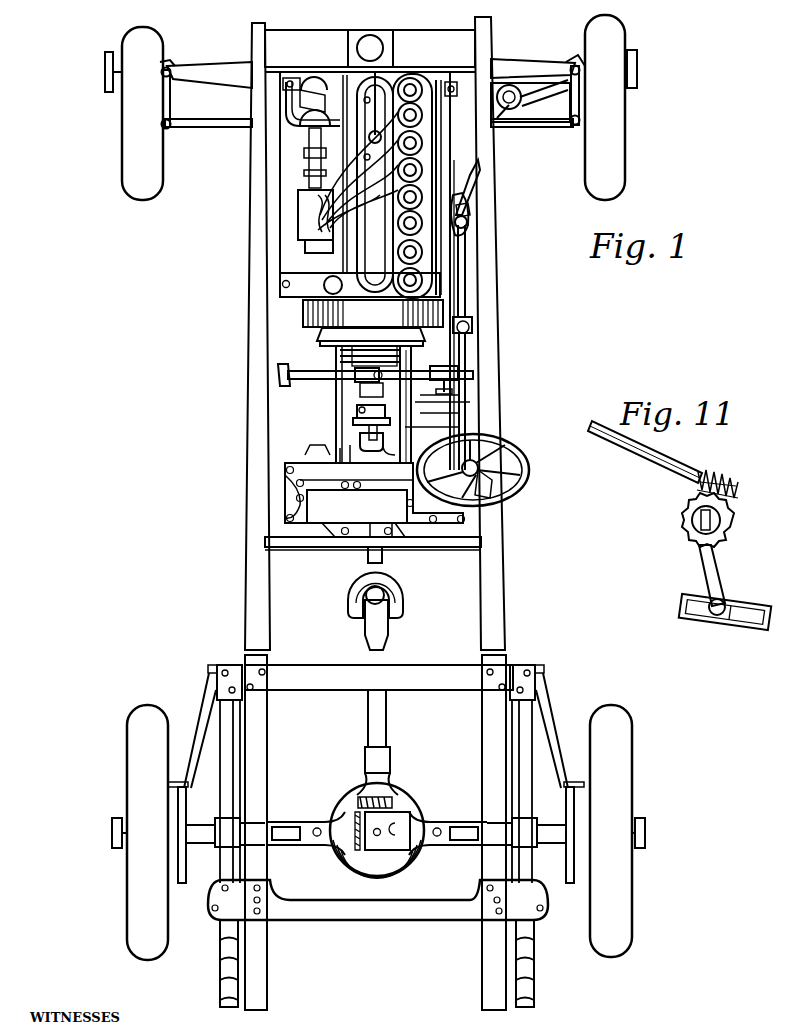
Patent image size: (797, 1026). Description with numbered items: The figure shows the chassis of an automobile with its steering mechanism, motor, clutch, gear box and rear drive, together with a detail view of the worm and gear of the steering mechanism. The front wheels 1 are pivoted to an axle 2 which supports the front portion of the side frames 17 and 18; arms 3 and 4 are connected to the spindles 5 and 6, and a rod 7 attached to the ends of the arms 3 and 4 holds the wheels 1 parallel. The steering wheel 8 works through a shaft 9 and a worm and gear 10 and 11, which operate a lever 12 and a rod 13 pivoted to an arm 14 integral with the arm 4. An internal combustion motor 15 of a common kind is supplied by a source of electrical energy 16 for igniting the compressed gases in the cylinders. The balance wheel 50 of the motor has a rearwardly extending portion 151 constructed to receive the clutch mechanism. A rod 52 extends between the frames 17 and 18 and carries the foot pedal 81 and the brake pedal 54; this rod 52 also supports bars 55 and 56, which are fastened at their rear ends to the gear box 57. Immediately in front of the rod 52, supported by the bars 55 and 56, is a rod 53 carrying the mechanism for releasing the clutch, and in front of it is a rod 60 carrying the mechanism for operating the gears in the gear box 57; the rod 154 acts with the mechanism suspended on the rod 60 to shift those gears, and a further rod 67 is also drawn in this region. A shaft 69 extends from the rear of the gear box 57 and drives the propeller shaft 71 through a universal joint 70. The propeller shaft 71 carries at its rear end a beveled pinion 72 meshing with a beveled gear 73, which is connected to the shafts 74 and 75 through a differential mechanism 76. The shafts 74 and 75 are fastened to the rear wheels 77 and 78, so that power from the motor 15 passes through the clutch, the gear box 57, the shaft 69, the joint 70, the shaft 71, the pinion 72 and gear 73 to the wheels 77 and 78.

In FIG. 1, the front wheels 1 is at (150, 43).
In FIG. 1, the axle 2 is at (217, 78).
In FIG. 1, the arm 3 is at (172, 97).
In FIG. 1, the arm 4 is at (566, 128).
In FIG. 1, the spindle 5 is at (575, 66).
In FIG. 1, the spindle 6 is at (172, 65).
In FIG. 1, the rod 7 is at (205, 127).
In FIG. 1, the steering wheel 8 is at (528, 455).
In FIG. 1, the shaft 9 is at (466, 298).
In FIG. 11, the shaft 9 is at (640, 468).
In FIG. 1, the worm 10 is at (466, 213).
In FIG. 11, the worm 10 is at (698, 487).
In FIG. 1, the gear 11 is at (467, 222).
In FIG. 11, the gear 11 is at (673, 516).
In FIG. 1, the lever 12 is at (462, 198).
In FIG. 11, the lever 12 is at (700, 560).
In FIG. 1, the rod 13 is at (478, 173).
In FIG. 11, the rod 13 is at (750, 628).
In FIG. 1, the arm 14 is at (170, 128).
In FIG. 1, the internal combustion motor 15 is at (460, 240).
In FIG. 1, the source of electrical energy 16 is at (305, 208).
In FIG. 1, the frame 17 is at (252, 275).
In FIG. 1, the frame 18 is at (492, 315).
In FIG. 1, the balance wheel 50 is at (303, 315).
In FIG. 1, the rearwardly extending portion 151 is at (323, 338).
In FIG. 1, the rod 53 is at (345, 362).
In FIG. 1, the rod 60 is at (466, 350).
In FIG. 1, the foot pedal 81 is at (280, 388).
In FIG. 1, the rod 52 is at (330, 379).
In FIG. 1, the brake pedal 54 is at (460, 390).
In FIG. 1, the rod 154 is at (417, 402).
In FIG. 1, the bar 55 is at (336, 420).
In FIG. 1, the bar 56 is at (418, 413).
In FIG. 1, the rod 67 is at (405, 427).
In FIG. 1, the gear box 57 is at (375, 491).
In FIG. 1, the shaft 69 is at (383, 555).
In FIG. 1, the universal joint 70 is at (398, 583).
In FIG. 1, the propeller shaft 71 is at (390, 627).
In FIG. 1, the beveled pinion 72 is at (390, 806).
In FIG. 1, the shaft 74 is at (332, 822).
In FIG. 1, the differential mechanism 76 is at (398, 820).
In FIG. 1, the beveled gear 73 is at (358, 847).
In FIG. 1, the shaft 75 is at (460, 842).
In FIG. 1, the wheel 77 is at (125, 878).
In FIG. 1, the wheel 78 is at (628, 878).